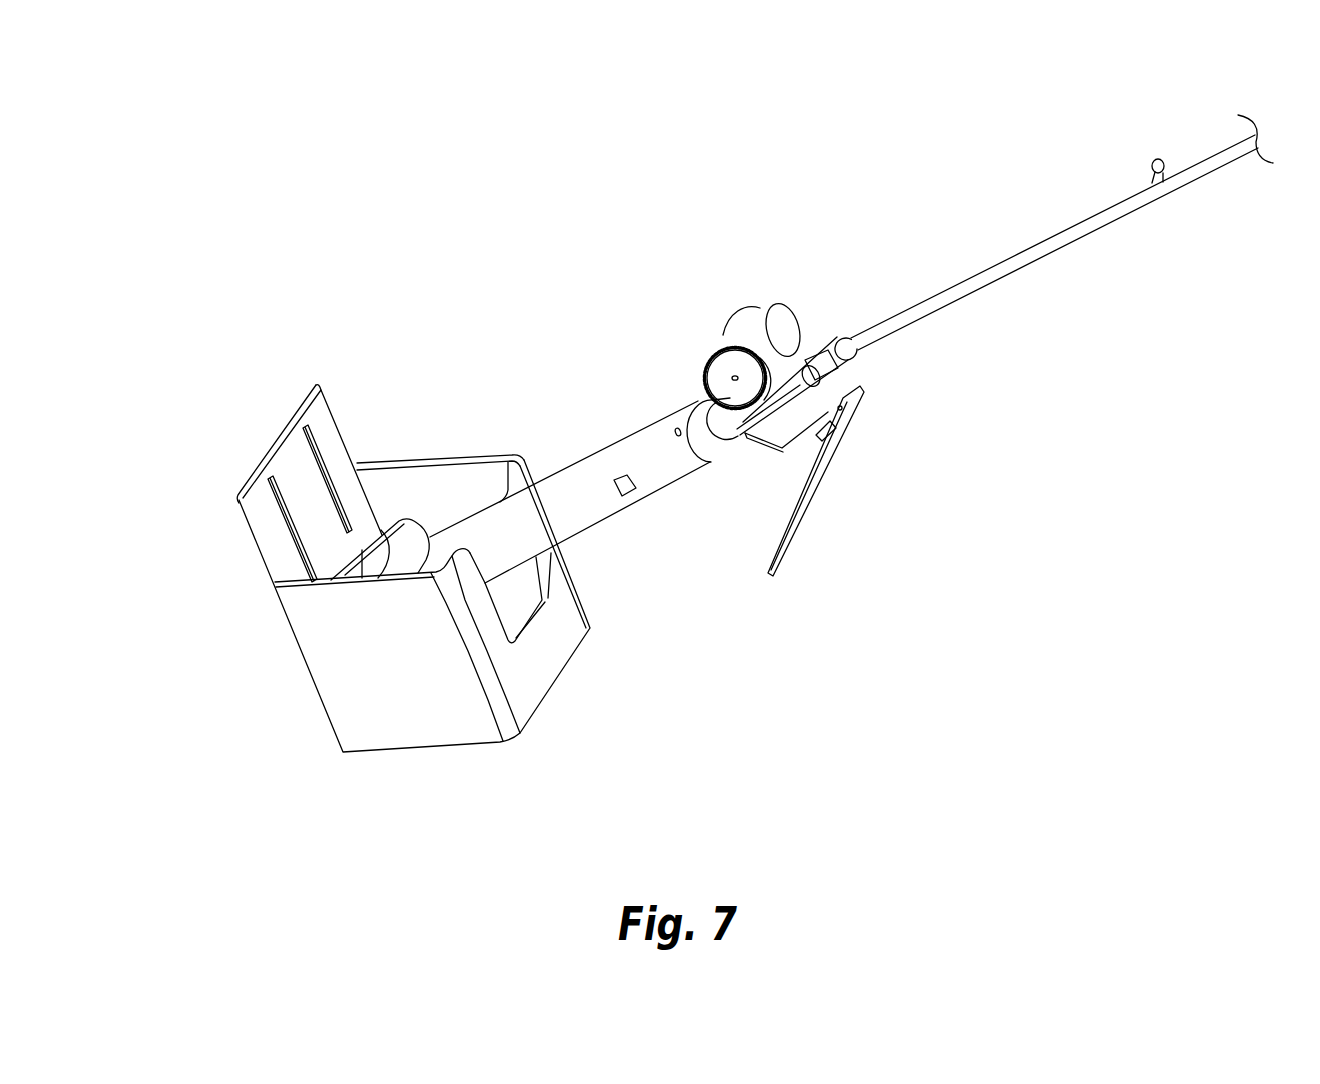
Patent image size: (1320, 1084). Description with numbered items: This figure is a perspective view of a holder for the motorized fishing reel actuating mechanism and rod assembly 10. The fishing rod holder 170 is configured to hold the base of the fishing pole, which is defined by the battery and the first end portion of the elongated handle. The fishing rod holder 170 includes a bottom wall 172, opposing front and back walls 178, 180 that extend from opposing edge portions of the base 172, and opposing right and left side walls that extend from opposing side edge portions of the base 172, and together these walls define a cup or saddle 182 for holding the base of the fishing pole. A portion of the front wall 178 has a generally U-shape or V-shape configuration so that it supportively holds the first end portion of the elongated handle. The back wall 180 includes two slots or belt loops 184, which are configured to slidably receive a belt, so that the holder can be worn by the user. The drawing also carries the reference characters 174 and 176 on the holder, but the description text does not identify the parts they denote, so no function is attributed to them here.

The surgical instrument assembly 10 is at (686, 196).
The fishing rod holder 170 is at (455, 322).
The bottom wall 172 is at (504, 628).
The cross bar 174 is at (497, 455).
The front plate 176 is at (337, 683).
The front wall 178 is at (553, 658).
The back wall 180 is at (260, 563).
The cup or saddle 182 is at (588, 561).
The slots or belt loops 184 is at (283, 474).